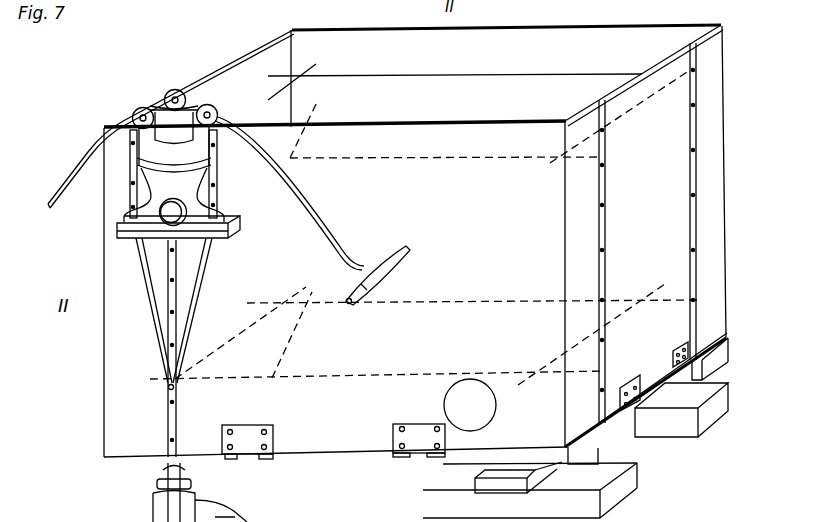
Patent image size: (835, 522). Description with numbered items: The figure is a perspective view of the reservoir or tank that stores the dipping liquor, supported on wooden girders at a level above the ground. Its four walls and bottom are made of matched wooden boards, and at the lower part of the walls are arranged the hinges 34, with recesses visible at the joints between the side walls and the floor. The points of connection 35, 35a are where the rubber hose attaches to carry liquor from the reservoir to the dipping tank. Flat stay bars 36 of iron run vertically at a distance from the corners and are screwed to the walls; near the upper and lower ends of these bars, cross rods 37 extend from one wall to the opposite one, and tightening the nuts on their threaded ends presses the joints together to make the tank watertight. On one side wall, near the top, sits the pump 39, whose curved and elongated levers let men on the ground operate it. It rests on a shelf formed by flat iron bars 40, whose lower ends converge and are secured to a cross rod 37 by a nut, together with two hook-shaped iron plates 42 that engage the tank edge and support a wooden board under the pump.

The hinges 34 is at (393, 440).
The point of connection of the rubber hose 35 is at (470, 405).
The point of connection of the rubber hose 35a is at (163, 226).
The flat stay bars 36 is at (168, 424).
The cross rods 37 is at (287, 93).
The pump 39 is at (174, 156).
The flat iron bars 40 is at (190, 308).
The iron plates 42 is at (128, 202).